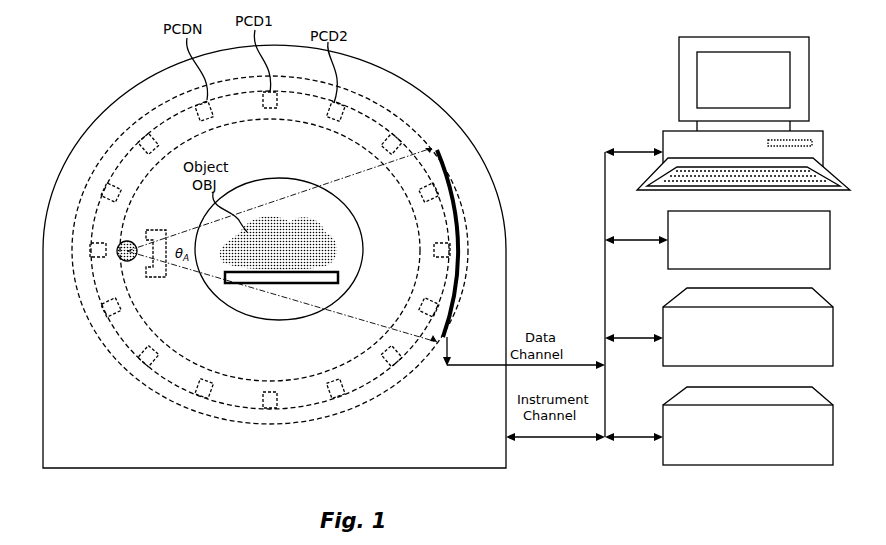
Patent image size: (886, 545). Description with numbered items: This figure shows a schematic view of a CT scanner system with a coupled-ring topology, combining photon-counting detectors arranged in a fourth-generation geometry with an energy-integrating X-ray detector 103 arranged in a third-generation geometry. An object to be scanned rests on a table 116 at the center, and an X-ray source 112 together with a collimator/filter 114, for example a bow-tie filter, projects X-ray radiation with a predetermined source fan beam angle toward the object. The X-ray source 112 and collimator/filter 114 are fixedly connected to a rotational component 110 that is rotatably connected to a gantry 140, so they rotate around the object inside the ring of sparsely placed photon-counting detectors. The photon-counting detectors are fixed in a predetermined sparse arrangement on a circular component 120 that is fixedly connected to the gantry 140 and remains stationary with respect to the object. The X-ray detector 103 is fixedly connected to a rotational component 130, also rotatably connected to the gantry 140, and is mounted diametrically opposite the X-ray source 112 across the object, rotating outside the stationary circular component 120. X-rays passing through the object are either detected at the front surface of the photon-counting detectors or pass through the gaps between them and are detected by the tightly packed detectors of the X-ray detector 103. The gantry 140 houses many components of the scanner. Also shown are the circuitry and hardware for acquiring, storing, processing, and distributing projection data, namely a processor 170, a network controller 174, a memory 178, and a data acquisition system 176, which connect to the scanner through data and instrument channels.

The X-ray detector 103 is at (452, 183).
The rotational component 110 is at (178, 356).
The X-ray source 112 is at (120, 262).
The collimator/filter 114 is at (147, 237).
The table 116 is at (267, 283).
The circular component 120 is at (220, 403).
The rotational component 130 is at (315, 418).
The gantry 140 is at (433, 102).
The processor 170 is at (743, 113).
The network controller 174 is at (749, 240).
The data acquisition system 176 is at (748, 426).
The memory 178 is at (748, 327).